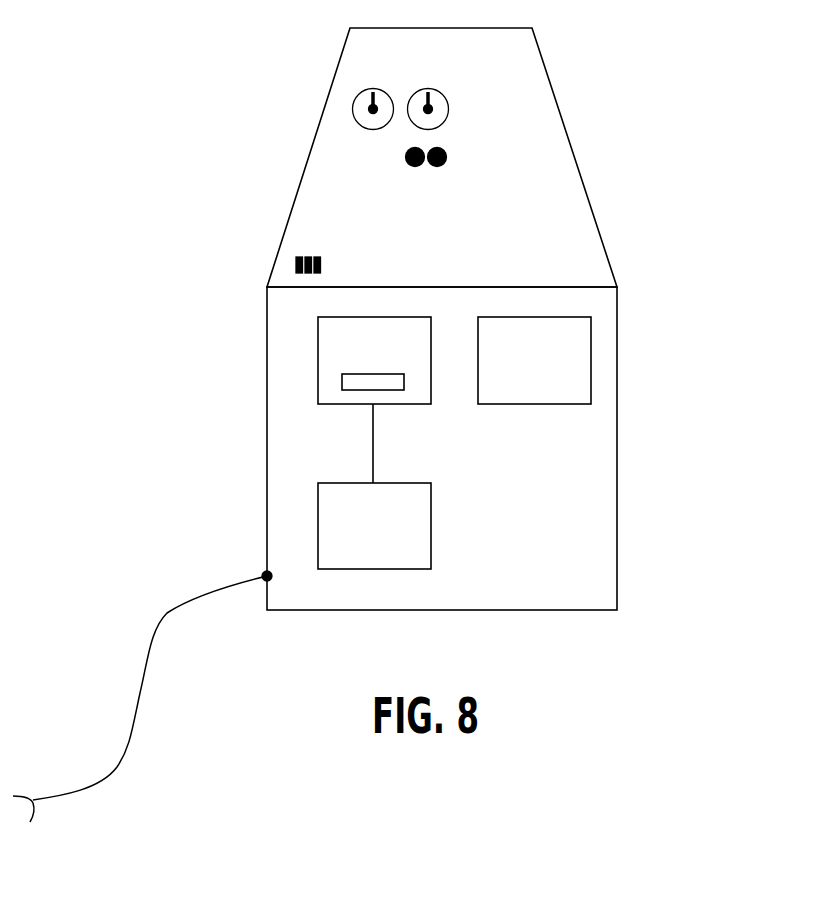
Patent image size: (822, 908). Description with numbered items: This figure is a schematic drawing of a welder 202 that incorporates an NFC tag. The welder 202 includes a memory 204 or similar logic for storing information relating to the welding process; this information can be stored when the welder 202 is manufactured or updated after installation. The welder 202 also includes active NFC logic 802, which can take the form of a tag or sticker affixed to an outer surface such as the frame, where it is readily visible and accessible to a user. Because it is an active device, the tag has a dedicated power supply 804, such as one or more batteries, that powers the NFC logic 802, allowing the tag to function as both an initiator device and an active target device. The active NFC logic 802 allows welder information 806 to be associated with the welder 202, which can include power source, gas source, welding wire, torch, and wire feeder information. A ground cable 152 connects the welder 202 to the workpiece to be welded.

The welder 202 is at (163, 97).
The active NFC logic 802 is at (318, 352).
The power supply 804 is at (318, 522).
The welder information 806 is at (404, 382).
The memory 204 is at (591, 339).
The ground cable 152 is at (138, 703).